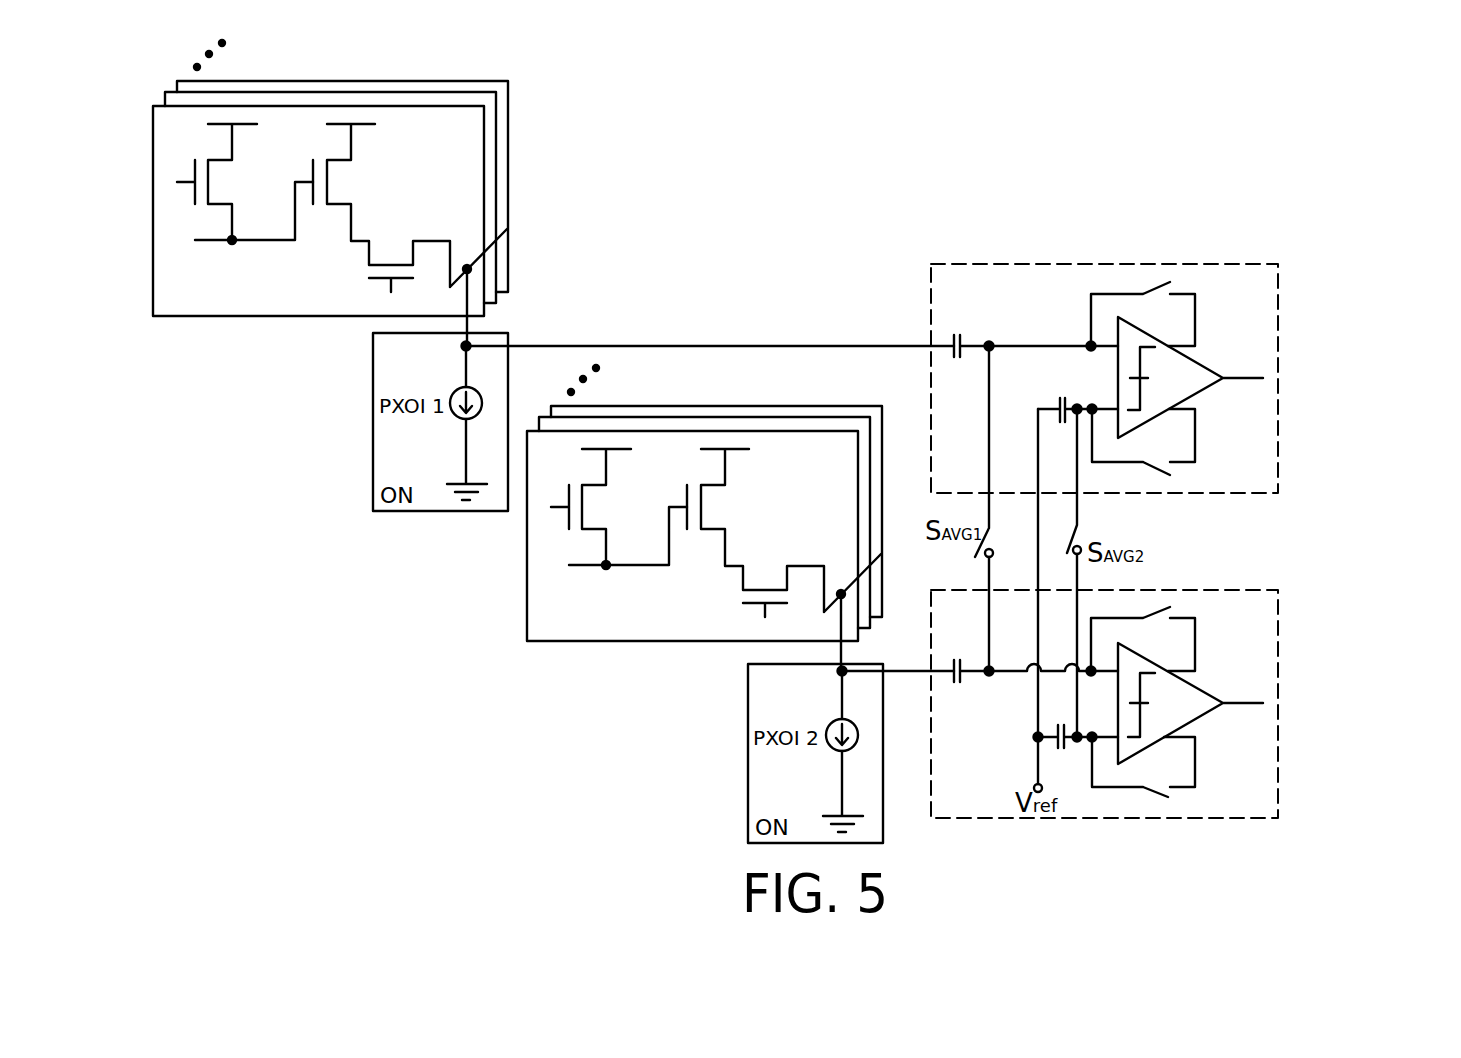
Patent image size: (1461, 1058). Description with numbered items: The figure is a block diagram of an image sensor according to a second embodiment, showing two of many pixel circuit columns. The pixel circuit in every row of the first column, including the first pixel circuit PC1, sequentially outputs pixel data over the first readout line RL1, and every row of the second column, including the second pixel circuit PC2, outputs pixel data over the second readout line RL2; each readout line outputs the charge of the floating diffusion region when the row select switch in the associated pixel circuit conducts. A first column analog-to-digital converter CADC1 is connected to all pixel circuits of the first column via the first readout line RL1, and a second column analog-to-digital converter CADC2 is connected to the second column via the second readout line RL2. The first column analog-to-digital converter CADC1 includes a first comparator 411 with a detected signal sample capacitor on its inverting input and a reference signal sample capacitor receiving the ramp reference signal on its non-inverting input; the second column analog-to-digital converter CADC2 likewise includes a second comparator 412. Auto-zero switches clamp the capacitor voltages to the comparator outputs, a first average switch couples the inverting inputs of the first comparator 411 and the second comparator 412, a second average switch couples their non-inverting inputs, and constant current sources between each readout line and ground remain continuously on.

The first comparator 411 is at (1193, 359).
The second comparator 412 is at (1197, 690).
The first pixel circuit PC1 is at (156, 284).
The second pixel circuit PC2 is at (527, 612).
The first readout line RL1 is at (467, 325).
The second readout line RL2 is at (842, 653).
The first column analog-to-digital converter CADC1 is at (1278, 364).
The second column analog-to-digital converter CADC2 is at (1278, 707).